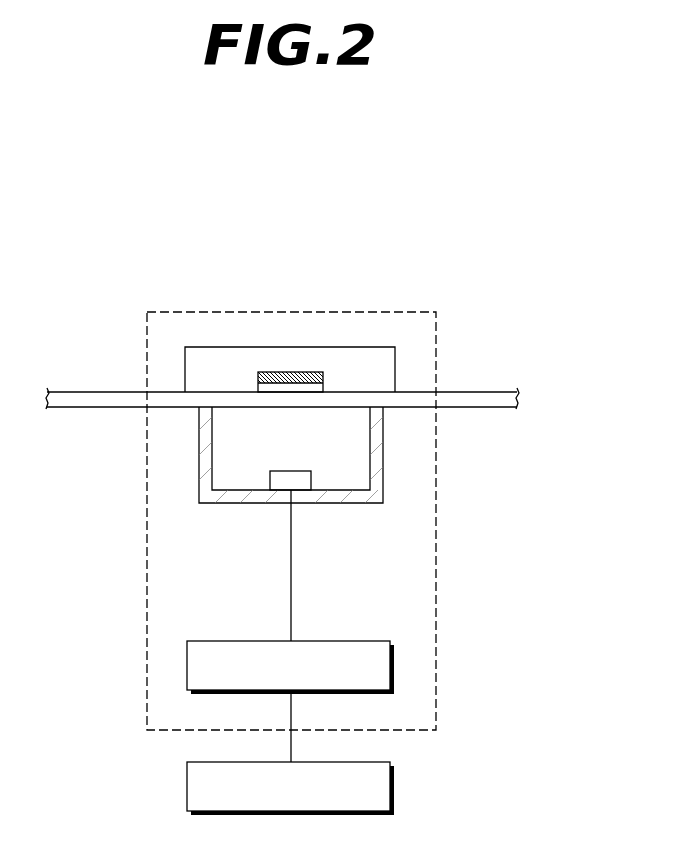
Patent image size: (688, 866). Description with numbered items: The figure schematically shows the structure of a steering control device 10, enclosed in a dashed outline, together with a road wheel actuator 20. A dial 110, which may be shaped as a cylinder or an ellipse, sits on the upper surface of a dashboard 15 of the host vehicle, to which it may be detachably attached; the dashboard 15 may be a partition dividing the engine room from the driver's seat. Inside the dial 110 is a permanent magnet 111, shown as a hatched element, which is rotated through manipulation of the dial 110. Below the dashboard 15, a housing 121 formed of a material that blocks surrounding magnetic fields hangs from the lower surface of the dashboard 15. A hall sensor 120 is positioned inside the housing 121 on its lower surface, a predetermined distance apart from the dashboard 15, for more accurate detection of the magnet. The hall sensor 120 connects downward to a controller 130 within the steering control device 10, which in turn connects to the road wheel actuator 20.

The steering control device 10 is at (170, 312).
The dashboard 15 is at (484, 392).
The road wheel actuator (RWA) 20 is at (394, 785).
The dial 110 is at (378, 347).
The permanent magnet 111 is at (281, 385).
The hall sensor 120 is at (310, 480).
The housing 121 is at (383, 458).
The controller 130 is at (394, 663).